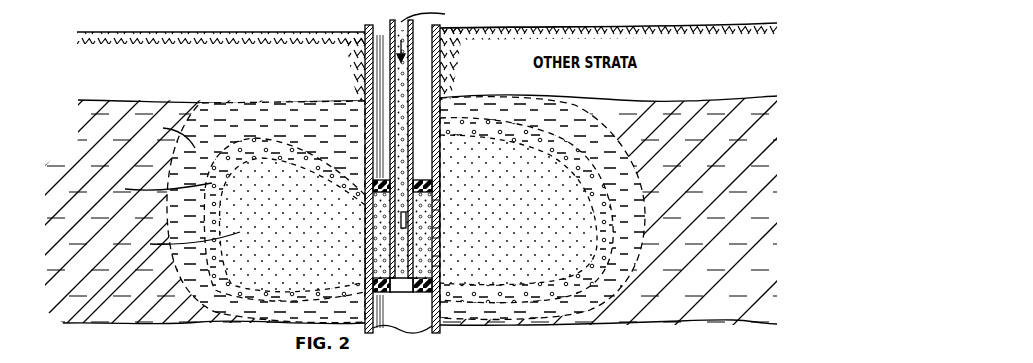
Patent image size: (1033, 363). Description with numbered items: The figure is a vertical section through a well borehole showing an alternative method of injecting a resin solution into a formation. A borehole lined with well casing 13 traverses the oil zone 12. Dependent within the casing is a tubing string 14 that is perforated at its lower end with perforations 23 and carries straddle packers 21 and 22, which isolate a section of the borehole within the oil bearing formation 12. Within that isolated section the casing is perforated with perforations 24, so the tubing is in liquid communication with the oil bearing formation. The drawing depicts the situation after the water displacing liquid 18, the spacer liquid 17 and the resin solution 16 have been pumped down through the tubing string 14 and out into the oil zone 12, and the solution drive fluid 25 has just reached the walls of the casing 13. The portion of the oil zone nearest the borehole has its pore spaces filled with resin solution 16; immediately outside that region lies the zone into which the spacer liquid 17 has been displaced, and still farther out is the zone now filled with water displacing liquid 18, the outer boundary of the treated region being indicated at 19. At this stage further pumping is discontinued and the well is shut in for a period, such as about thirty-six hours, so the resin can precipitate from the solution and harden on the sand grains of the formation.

The oil zone 12 is at (722, 170).
The well casing 13 is at (366, 68).
The tubing string 14 is at (413, 90).
The resin solution 16 is at (263, 267).
The spacer liquid 17 is at (212, 216).
The water displacing liquid 18 is at (248, 132).
The displaced zone boundary 19 is at (526, 210).
The straddle packer 21 is at (427, 180).
The straddle packer 22 is at (428, 293).
The perforations 23 is at (414, 222).
The perforations 24 is at (440, 232).
The solution drive fluid 25 is at (401, 128).